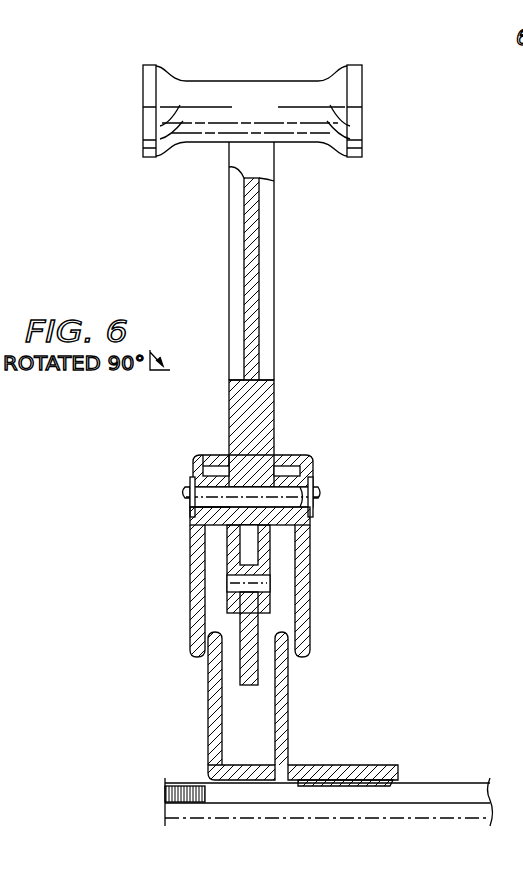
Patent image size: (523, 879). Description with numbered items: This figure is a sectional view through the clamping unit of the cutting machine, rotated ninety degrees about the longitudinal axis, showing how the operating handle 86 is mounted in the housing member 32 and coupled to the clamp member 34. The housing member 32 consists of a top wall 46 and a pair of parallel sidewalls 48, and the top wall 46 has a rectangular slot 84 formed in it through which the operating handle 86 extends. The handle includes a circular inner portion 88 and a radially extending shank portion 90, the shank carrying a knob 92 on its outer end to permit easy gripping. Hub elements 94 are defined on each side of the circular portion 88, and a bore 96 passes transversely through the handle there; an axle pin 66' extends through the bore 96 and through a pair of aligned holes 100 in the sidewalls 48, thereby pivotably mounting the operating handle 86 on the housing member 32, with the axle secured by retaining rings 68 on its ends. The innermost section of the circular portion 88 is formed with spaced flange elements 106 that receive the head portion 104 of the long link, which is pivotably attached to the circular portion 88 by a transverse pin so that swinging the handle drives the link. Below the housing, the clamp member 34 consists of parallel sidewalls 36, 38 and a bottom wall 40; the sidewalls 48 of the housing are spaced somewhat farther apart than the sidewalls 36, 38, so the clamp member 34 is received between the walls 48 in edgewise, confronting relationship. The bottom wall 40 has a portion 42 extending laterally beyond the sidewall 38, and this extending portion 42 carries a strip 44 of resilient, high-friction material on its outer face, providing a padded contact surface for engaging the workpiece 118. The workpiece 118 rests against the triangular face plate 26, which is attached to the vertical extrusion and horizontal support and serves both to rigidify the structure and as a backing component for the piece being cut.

The knob 92 is at (233, 90).
The operating handle 86 is at (239, 314).
The shank portion 90 is at (250, 236).
The circular inner portion 88 is at (262, 404).
The rectangular slot 84 is at (275, 460).
The top wall 46 is at (209, 452).
The housing member 32 is at (266, 564).
The bore 96 is at (318, 493).
The aligned holes 100 is at (189, 496).
The retaining rings 68 is at (191, 486).
The hub elements 94 is at (308, 536).
The axle pin 66' is at (181, 526).
The sidewalls 48 is at (195, 594).
The flange elements 106 is at (265, 561).
The head portion 104 is at (243, 663).
The clamp member 34 is at (277, 744).
The sidewall 36 is at (212, 716).
The sidewall 38 is at (284, 697).
The bottom wall 40 is at (252, 770).
The extending portion 42 is at (328, 770).
The strip 44 is at (365, 779).
The triangular face plate 26 is at (425, 814).
The workpiece 118 is at (435, 783).